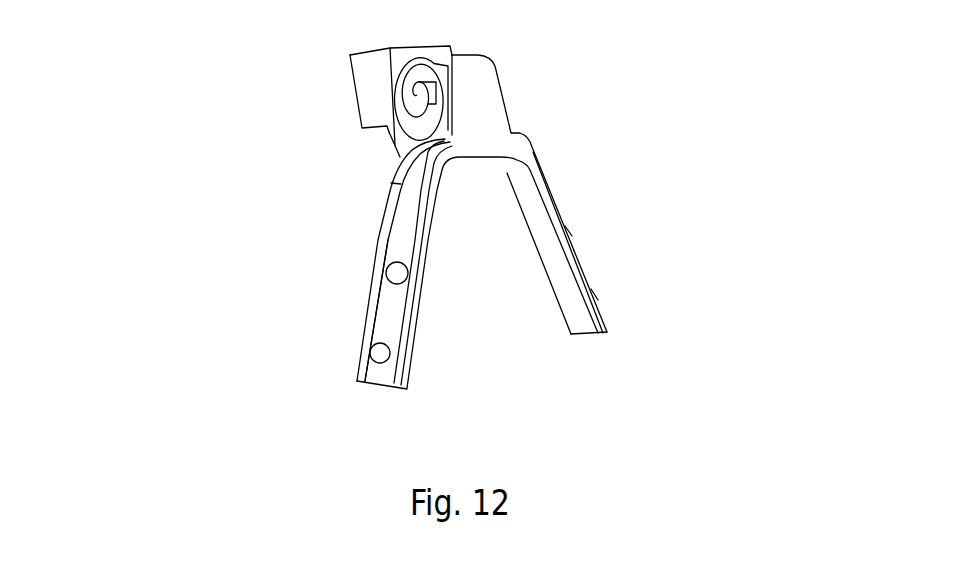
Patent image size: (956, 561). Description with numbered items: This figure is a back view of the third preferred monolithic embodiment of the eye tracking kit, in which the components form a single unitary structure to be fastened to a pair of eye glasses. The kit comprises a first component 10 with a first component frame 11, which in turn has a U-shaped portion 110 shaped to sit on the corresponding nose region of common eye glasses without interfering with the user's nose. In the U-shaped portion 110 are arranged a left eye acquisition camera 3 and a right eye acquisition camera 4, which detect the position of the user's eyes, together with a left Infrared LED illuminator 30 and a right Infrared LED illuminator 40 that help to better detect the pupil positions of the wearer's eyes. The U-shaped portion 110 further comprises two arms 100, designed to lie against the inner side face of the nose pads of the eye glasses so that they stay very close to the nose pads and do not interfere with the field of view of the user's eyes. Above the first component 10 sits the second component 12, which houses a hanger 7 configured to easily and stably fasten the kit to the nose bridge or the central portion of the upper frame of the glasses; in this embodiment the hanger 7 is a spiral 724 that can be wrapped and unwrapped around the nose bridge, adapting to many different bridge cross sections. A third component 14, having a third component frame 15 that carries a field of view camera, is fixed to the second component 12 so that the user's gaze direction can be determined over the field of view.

The first component 10 is at (300, 290).
The first component frame 11 is at (372, 246).
The U-shaped portion 110 is at (370, 317).
The left eye acquisition camera 3 is at (386, 275).
The left Infrared LED illuminator 30 is at (358, 360).
The arms 100 is at (581, 327).
The right eye acquisition camera 4 is at (568, 233).
The right Infrared LED illuminator 40 is at (595, 298).
The third component 14 is at (312, 118).
The third component frame 15 is at (357, 118).
The second component 12 is at (500, 66).
The hanger 7 is at (507, 102).
The spiral 724 is at (476, 92).